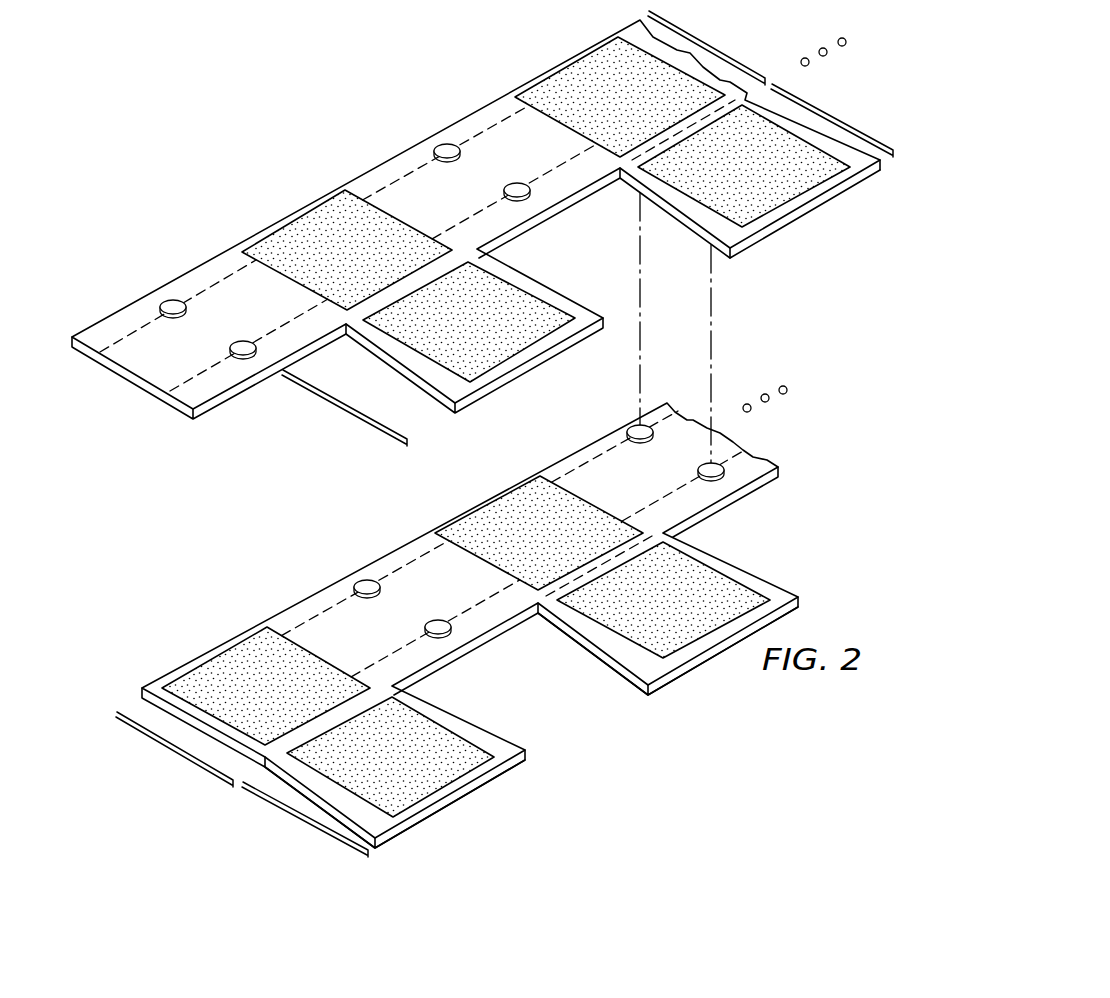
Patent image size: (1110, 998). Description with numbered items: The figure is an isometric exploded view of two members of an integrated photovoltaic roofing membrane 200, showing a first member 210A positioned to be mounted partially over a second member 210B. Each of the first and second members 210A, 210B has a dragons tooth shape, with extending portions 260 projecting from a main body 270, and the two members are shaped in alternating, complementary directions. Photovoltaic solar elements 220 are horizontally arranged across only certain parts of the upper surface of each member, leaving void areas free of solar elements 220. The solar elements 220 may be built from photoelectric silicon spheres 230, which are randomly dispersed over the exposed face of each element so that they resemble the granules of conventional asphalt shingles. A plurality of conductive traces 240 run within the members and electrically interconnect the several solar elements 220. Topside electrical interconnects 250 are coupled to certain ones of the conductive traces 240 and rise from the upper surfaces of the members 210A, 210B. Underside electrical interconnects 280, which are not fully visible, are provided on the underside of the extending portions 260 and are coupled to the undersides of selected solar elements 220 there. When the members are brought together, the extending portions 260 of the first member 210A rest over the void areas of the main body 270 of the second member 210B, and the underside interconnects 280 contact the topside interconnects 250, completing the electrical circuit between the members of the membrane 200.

The integrated photovoltaic roofing membrane 200 is at (310, 92).
The first member 210A is at (472, 107).
The second member 210B is at (287, 602).
The photovoltaic solar elements 220 is at (327, 197).
The photoelectric silicon spheres 230 is at (288, 236).
The conductive traces 240 is at (218, 280).
The topside electrical interconnects 250 is at (435, 148).
The extending portions 260 is at (567, 470).
The main body 270 is at (440, 399).
The underside electrical interconnects 280 is at (484, 407).